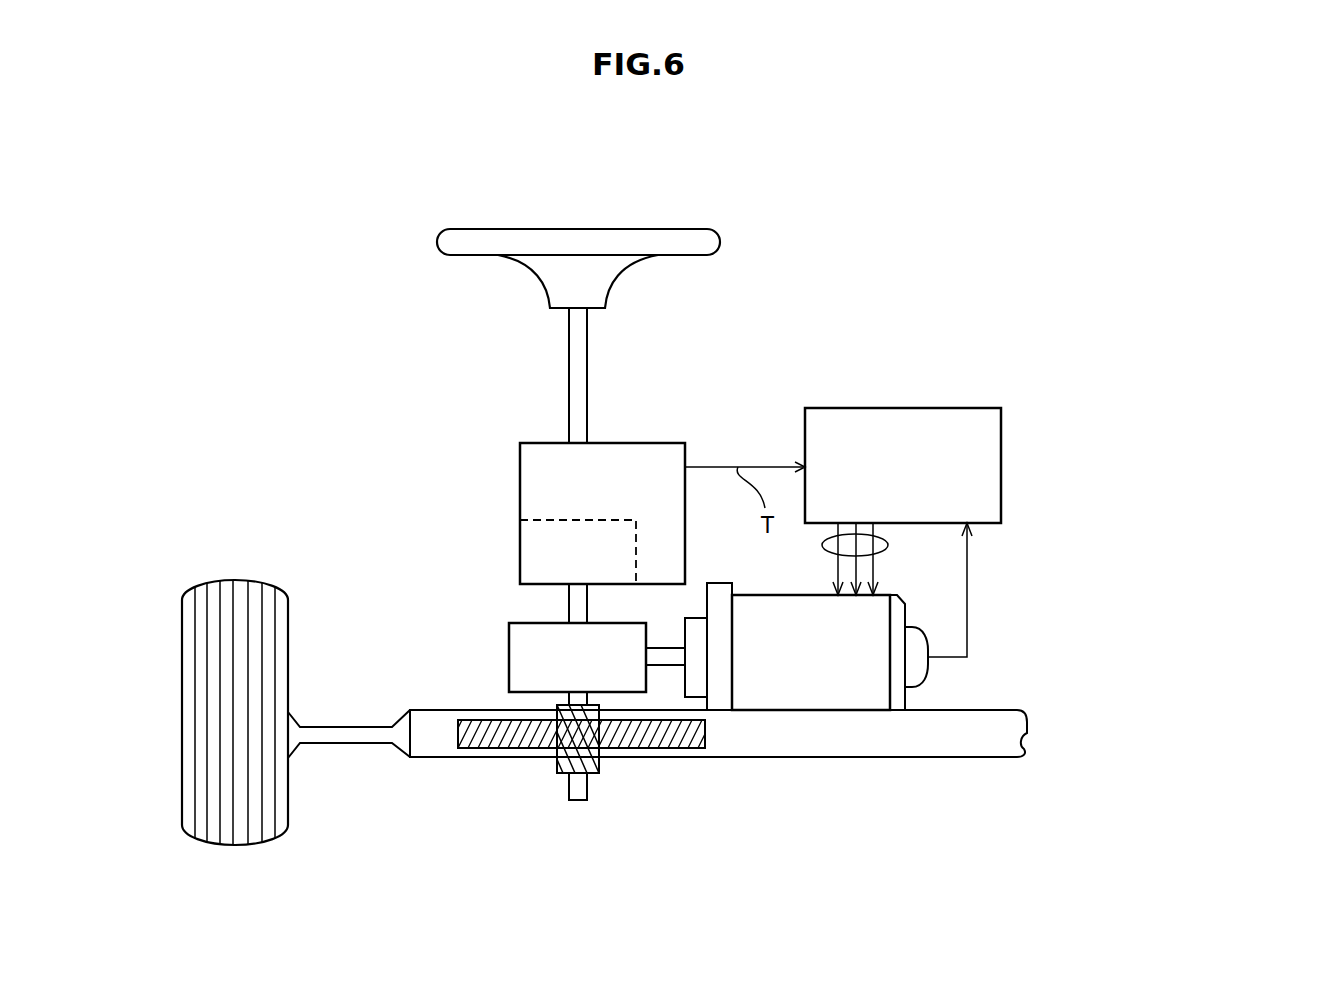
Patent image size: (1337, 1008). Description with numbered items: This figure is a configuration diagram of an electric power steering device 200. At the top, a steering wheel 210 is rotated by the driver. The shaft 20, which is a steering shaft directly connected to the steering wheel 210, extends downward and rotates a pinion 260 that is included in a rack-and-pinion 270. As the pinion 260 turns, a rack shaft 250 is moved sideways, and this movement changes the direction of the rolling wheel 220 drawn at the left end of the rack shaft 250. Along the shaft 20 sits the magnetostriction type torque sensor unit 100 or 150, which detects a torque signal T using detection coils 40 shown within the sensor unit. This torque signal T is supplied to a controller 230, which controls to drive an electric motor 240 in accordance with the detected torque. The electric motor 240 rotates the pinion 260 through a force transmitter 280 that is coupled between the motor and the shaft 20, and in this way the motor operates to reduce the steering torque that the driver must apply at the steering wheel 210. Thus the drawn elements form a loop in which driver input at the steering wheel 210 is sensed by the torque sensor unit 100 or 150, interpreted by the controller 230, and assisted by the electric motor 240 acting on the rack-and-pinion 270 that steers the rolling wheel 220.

The electric power steering device 200 is at (940, 206).
The steering wheel 210 is at (574, 228).
The shaft 20 is at (568, 375).
The magnetostriction type torque sensor unit 100 is at (860, 437).
The magnetostriction type torque sensor unit 150 is at (626, 440).
The detection coils 40 is at (615, 520).
The controller 230 is at (922, 408).
The electric motor 240 is at (832, 690).
The force transmitter 280 is at (509, 660).
The rack shaft 250 is at (965, 735).
The pinion 260 is at (549, 760).
The rack-and-pinion 270 is at (587, 798).
The rolling wheel 220 is at (225, 580).